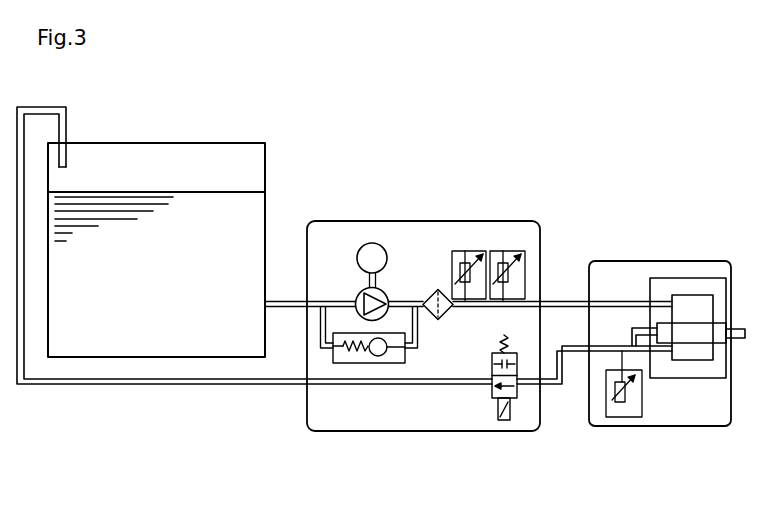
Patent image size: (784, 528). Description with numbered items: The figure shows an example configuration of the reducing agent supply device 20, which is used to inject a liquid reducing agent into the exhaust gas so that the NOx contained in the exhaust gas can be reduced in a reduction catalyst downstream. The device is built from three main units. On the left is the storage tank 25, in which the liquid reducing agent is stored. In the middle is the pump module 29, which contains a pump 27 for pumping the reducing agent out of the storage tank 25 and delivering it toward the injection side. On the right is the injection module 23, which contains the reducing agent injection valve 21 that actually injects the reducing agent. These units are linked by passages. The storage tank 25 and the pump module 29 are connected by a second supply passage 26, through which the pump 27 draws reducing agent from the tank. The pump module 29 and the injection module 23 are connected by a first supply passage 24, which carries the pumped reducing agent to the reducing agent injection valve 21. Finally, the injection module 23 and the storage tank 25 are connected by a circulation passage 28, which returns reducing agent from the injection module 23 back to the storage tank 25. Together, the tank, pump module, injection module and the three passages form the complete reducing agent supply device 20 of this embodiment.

The reducing agent supply device 20 is at (533, 147).
The reducing agent injection valve 21 is at (698, 340).
The injection module 23 is at (622, 435).
The first supply passage 24 is at (560, 300).
The storage tank 25 is at (270, 149).
The second supply passage 26 is at (278, 298).
The pump 27 is at (360, 290).
The circulation passage 28 is at (237, 381).
The pump module 29 is at (335, 436).